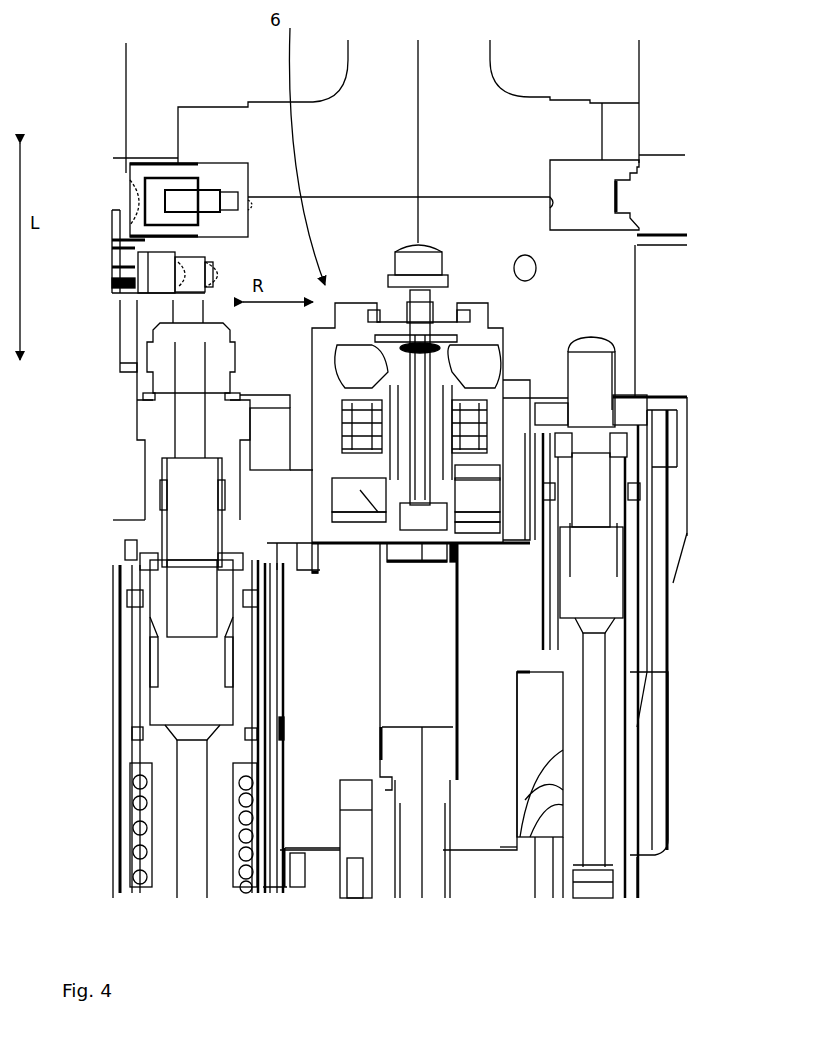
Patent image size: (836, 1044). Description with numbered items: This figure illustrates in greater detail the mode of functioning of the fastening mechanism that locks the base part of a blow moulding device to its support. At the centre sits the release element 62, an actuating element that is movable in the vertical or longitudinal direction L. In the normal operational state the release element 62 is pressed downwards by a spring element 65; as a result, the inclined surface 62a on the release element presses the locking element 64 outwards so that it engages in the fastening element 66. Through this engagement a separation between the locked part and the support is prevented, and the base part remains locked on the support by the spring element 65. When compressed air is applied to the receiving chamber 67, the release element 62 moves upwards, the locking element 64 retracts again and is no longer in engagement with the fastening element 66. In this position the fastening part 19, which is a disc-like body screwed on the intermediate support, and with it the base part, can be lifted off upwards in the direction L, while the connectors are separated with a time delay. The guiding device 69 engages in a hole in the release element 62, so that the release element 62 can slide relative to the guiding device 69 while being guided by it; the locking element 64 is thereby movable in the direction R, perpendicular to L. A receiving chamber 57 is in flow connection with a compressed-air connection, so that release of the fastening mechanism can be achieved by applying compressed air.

The fastening part 19 is at (543, 270).
The receiving chamber 57 is at (480, 530).
The release element 62 is at (438, 398).
The inclined surface 62a is at (445, 347).
The locking element 64 is at (353, 358).
The spring element 65 is at (455, 418).
The fastening element 66 is at (350, 372).
The receiving chamber 67 is at (470, 482).
The guiding device 69 is at (418, 440).